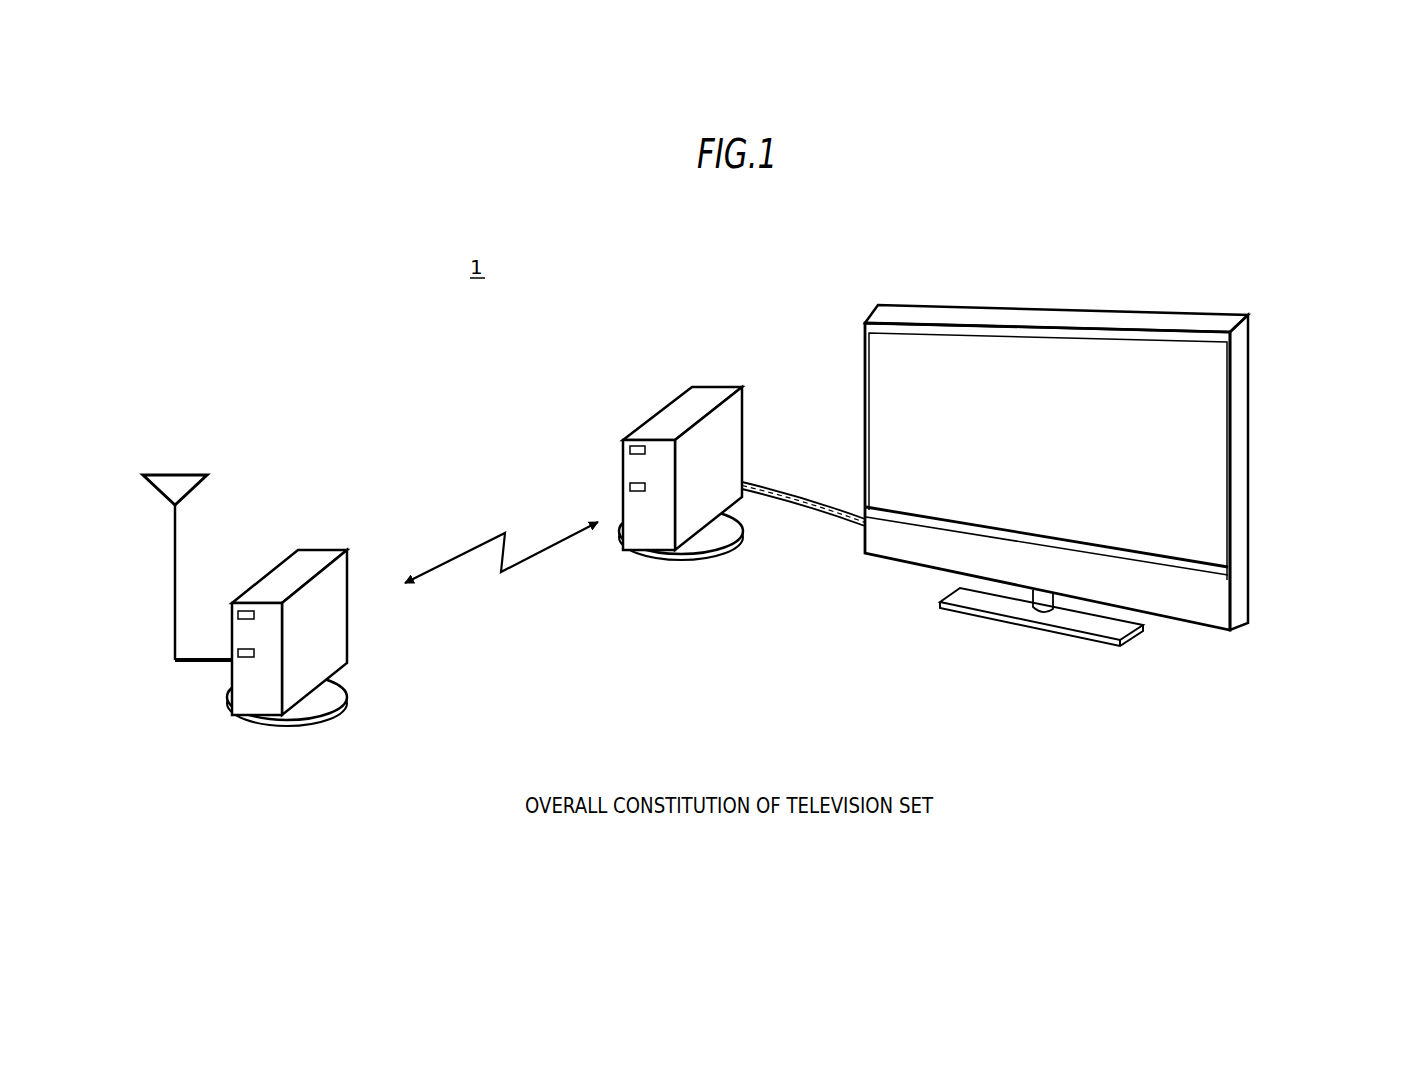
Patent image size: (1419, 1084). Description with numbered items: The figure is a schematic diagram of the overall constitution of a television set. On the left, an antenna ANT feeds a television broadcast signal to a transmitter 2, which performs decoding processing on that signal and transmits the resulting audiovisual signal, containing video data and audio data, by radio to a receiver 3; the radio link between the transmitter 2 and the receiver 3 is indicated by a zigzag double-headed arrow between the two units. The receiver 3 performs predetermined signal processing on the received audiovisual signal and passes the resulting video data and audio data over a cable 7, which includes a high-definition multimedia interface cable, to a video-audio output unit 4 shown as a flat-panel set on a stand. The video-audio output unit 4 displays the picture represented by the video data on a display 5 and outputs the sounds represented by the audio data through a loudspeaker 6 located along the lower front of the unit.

The transmitter 2 is at (305, 548).
The receiver 3 is at (698, 385).
The video-audio output unit 4 is at (1102, 467).
The display 5 is at (905, 490).
The loudspeaker 6 is at (1186, 603).
The cable 7 is at (782, 508).
The antenna ANT is at (173, 470).